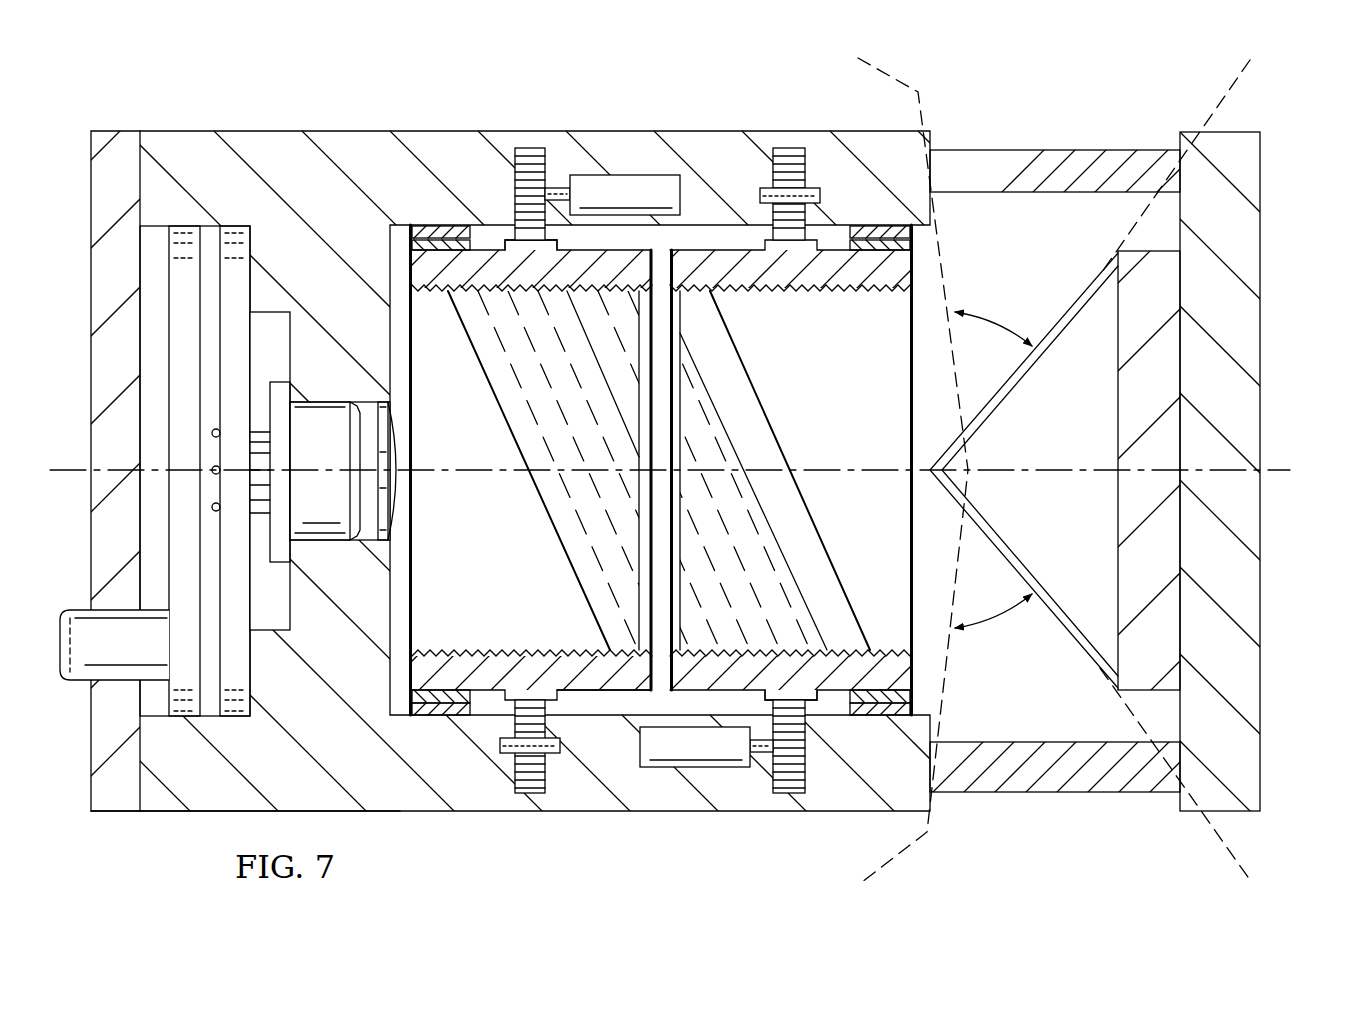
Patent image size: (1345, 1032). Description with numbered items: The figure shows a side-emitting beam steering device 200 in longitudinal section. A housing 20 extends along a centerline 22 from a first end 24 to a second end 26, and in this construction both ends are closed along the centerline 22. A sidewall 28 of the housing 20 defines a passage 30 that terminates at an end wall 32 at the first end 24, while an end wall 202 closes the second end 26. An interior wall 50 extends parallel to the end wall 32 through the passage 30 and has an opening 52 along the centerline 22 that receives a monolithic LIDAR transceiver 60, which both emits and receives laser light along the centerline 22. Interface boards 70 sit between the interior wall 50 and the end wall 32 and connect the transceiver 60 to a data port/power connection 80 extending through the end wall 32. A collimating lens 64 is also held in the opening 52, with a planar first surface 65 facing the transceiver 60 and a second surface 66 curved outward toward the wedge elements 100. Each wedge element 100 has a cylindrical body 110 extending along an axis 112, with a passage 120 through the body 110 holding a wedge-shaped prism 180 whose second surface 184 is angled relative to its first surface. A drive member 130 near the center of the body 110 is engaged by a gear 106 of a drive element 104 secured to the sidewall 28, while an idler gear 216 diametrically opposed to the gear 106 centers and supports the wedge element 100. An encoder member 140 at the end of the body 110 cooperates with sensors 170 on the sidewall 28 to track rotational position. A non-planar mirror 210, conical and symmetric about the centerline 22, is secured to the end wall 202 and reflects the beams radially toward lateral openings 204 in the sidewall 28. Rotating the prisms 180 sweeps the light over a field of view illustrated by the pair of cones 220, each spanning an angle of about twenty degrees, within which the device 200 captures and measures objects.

The housing 20 is at (672, 467).
The centerline 22 is at (1024, 470).
The first end 24 is at (91, 820).
The second end 26 is at (923, 500).
The sidewall 28 is at (398, 812).
The passage 30 is at (583, 696).
The end wall 32 is at (103, 140).
The interior wall 50 is at (333, 693).
The opening 52 is at (366, 420).
The monolithic LIDAR transceiver 60 is at (333, 480).
The collimating lens 64 is at (428, 471).
The planar first surface 65 is at (378, 520).
The second surface 66 is at (400, 462).
The interface boards 70 is at (232, 340).
The data port/power connection 80 is at (85, 688).
The wedge element 100 is at (672, 449).
The drive element 104 is at (628, 180).
The gear 106 is at (530, 148).
The cylindrical body 110 is at (455, 655).
The axis 112 is at (1085, 472).
The passage 120 is at (659, 470).
The drive member 130 is at (517, 254).
The encoder member 140 is at (437, 247).
The sensors 170 is at (447, 228).
The wedge-shaped prism 180 is at (556, 390).
The second surface 184 is at (548, 517).
The beam steering device 200 is at (672, 500).
The end wall 202 is at (1262, 250).
The lateral openings 204 is at (1080, 148).
The non-planar mirror 210 is at (923, 500).
The idler gear 216 is at (792, 148).
The cones 220 is at (920, 90).